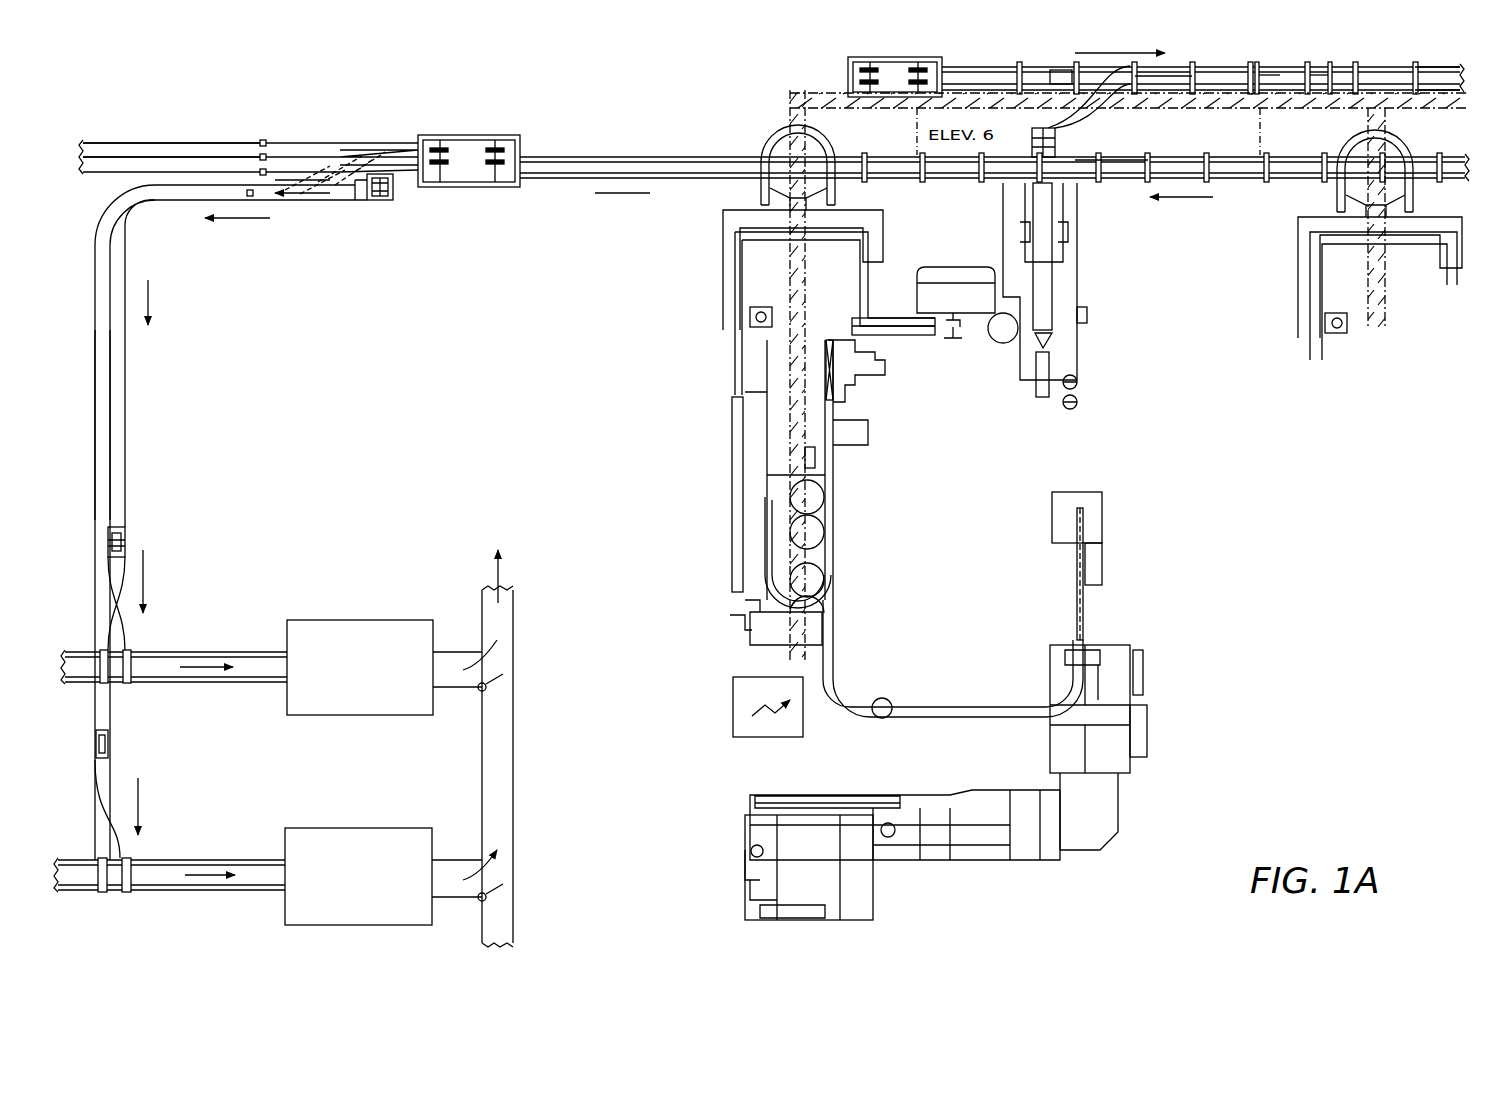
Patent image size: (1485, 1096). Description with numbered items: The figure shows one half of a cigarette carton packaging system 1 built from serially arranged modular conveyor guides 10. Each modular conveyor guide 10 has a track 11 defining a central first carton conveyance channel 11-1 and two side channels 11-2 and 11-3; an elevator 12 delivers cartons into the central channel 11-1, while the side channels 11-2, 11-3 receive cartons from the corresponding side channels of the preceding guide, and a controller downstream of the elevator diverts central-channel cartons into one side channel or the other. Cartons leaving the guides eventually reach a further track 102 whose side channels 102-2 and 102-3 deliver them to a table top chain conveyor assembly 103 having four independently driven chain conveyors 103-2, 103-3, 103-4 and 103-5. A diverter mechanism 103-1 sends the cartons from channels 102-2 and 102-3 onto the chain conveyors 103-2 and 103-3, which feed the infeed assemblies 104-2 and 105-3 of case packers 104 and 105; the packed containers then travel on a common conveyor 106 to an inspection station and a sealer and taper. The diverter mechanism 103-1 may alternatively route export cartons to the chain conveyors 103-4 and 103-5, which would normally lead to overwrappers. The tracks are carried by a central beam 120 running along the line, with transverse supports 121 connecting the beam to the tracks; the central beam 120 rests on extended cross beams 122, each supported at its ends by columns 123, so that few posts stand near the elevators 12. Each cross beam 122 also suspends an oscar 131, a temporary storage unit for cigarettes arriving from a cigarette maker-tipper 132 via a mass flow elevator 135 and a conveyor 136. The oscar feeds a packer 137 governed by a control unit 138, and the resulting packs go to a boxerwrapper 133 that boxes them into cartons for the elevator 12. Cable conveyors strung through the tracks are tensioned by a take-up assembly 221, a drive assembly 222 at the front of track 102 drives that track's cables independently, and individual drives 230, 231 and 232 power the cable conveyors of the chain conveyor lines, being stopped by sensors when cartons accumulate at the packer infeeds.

The cigarette carton packaging system 1 is at (708, 76).
The modular conveyor guide 10 is at (1338, 68).
The track 11 is at (1428, 72).
The first carton conveyance channel 11-1 is at (1282, 76).
The second carton conveyance channel 11-2 is at (1328, 54).
The third carton conveyance channel 11-3 is at (1218, 75).
The elevator 12 is at (1035, 145).
The track 102 is at (1308, 182).
The side channel 102-2 is at (710, 160).
The side channel 102-3 is at (562, 180).
The table top chain conveyor assembly 103 is at (266, 140).
The diverter mechanism 103-1 is at (345, 158).
The chain conveyor 103-2 is at (110, 256).
The chain conveyor 103-3 is at (112, 378).
The chain conveyor 103-4 is at (158, 118).
The chain conveyor 103-5 is at (190, 158).
The case packer 104 is at (386, 808).
The infeed assembly 104-2 is at (236, 866).
The case packer 105 is at (398, 605).
The infeed assembly 105-3 is at (236, 635).
The common conveyor 106 is at (503, 718).
The central beam 120 is at (830, 104).
The support 121 is at (917, 140).
The cross beam 122 is at (1366, 124).
The column 123 is at (790, 100).
The oscar 131 is at (836, 554).
The cigarette maker-tipper 132 is at (1042, 790).
The boxerwrapper 133 is at (990, 262).
The mass flow elevator 135 is at (1096, 526).
The conveyor 136 is at (1002, 712).
The packer 137 is at (872, 384).
The control unit 138 is at (768, 740).
The take-up assembly 221 is at (912, 62).
The drive assembly 222 is at (440, 142).
The drive 230 is at (393, 200).
The drive 231 is at (125, 532).
The drive 232 is at (108, 738).